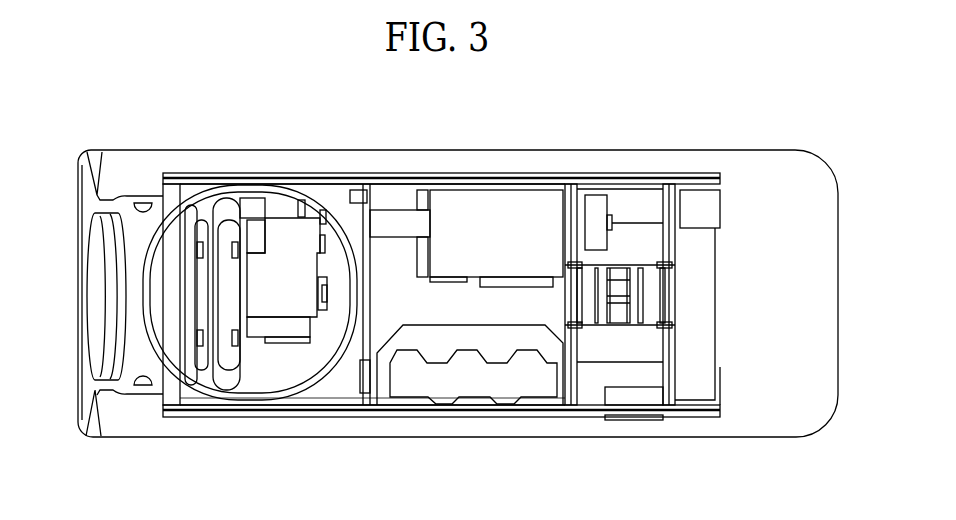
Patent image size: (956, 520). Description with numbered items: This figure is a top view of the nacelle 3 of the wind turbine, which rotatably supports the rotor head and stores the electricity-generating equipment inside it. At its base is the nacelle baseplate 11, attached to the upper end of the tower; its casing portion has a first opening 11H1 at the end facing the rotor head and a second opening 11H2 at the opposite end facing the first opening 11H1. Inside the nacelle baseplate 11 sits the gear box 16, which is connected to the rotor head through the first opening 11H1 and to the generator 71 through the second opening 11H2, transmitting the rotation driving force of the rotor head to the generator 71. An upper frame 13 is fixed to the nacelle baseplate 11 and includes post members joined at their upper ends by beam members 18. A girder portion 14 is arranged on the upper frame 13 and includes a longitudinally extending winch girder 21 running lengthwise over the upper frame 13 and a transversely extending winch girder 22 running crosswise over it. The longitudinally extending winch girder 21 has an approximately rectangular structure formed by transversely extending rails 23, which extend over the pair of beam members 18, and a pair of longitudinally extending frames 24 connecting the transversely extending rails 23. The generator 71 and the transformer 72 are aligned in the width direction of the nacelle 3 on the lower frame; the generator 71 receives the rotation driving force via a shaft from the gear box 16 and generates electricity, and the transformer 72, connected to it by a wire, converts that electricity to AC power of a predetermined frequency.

The nacelle 3 is at (746, 142).
The nacelle baseplate 11 is at (128, 406).
The first opening 11H1 is at (88, 290).
The second opening 11H2 is at (347, 300).
The upper frame 13 is at (270, 162).
The girder portion 14 is at (762, 218).
The gear box 16 is at (279, 338).
The beam members 18 is at (353, 183).
The longitudinally extending winch girder 21 is at (690, 238).
The transversely extending winch girder 22 is at (690, 285).
The transversely extending rails 23 is at (568, 376).
The longitudinally extending frames 24 is at (632, 188).
The generator 71 is at (512, 195).
The transformer 72 is at (480, 397).